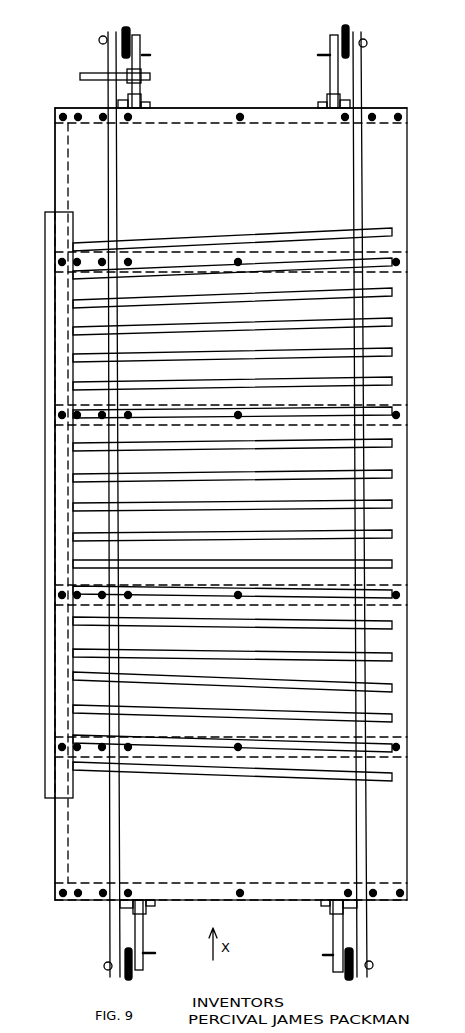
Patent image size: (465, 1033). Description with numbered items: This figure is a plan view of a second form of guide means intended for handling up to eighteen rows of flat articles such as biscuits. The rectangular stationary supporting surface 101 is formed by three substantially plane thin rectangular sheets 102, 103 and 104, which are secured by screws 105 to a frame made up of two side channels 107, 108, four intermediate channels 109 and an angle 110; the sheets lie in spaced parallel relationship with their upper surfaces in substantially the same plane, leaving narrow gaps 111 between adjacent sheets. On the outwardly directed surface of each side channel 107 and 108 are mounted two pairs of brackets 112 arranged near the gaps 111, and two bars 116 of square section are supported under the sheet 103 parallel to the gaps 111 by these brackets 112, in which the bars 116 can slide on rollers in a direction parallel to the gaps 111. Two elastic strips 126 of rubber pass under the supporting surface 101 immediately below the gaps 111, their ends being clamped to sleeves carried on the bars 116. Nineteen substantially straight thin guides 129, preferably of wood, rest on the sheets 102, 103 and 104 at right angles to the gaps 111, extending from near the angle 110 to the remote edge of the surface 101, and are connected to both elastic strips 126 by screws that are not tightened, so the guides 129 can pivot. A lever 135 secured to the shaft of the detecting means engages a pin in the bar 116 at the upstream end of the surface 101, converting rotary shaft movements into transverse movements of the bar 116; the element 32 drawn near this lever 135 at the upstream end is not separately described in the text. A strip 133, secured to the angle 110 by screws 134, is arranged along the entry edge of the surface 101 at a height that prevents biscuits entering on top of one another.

The stationary supporting surface 101 is at (245, 91).
The rectangular sheet 102 is at (57, 193).
The rectangular sheet 103 is at (203, 126).
The rectangular sheet 104 is at (407, 196).
The screws 105 is at (62, 119).
The side channel 107 is at (273, 113).
The side channel 108 is at (262, 900).
The intermediate channels 109 is at (405, 268).
The angle 110 is at (57, 171).
The gaps 111 is at (113, 180).
The brackets 112 is at (118, 100).
The bars 116 is at (141, 47).
The elastic strips 126 is at (99, 40).
The guides 129 is at (372, 659).
The strip 133 is at (50, 337).
The screws 134 is at (58, 262).
The lever 135 is at (141, 74).
The rod 32 is at (90, 73).